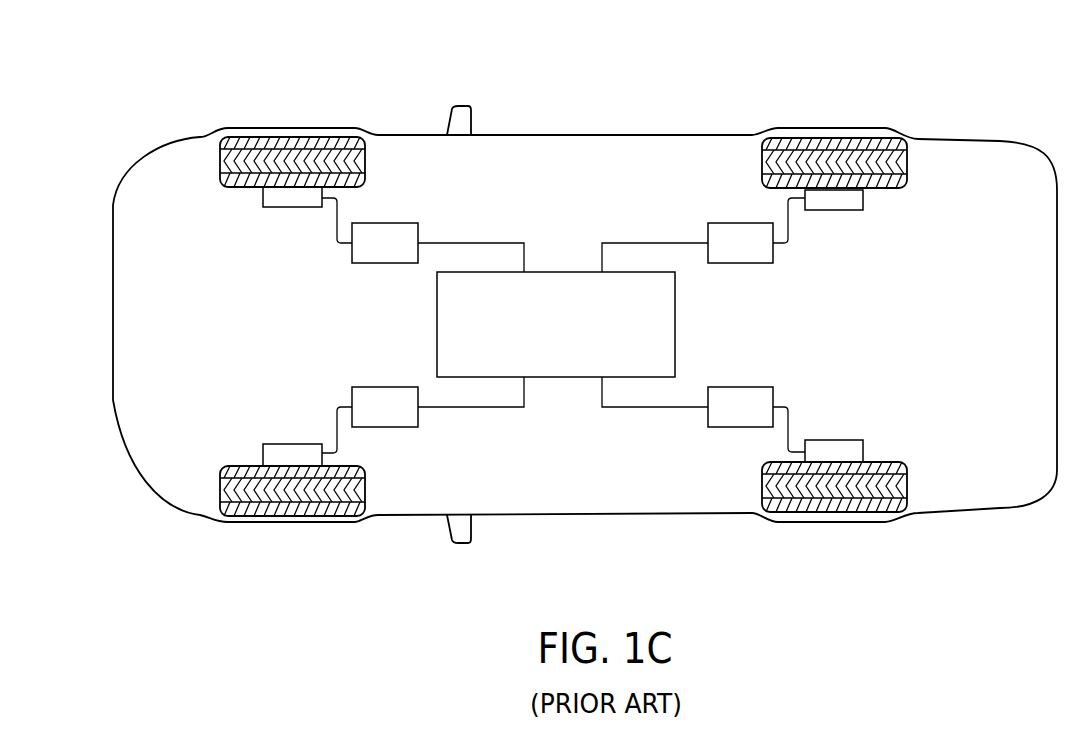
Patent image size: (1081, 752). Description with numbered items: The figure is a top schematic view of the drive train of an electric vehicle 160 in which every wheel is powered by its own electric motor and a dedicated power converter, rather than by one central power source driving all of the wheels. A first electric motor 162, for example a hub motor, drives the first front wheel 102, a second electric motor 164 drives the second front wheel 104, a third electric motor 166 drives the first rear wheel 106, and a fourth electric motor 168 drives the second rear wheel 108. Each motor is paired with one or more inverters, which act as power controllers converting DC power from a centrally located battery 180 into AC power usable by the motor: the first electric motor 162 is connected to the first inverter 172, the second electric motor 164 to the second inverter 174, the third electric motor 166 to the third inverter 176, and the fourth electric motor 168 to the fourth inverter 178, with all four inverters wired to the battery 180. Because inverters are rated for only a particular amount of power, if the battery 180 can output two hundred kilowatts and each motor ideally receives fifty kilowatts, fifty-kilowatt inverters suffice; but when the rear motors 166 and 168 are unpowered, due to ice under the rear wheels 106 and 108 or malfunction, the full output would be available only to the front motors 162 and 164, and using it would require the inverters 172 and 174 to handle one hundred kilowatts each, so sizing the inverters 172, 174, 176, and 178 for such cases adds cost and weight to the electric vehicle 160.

The electric vehicle 160 is at (100, 82).
The first front wheel 102 is at (300, 138).
The first rear wheel 106 is at (827, 138).
The second front wheel 104 is at (290, 514).
The second rear wheel 108 is at (845, 512).
The first electric motor 162 is at (287, 200).
The third electric motor 166 is at (835, 203).
The second electric motor 164 is at (293, 448).
The fourth electric motor 168 is at (840, 447).
The first inverter 172 is at (389, 238).
The third inverter 176 is at (737, 238).
The second inverter 174 is at (395, 420).
The fourth inverter 178 is at (727, 420).
The battery 180 is at (567, 287).